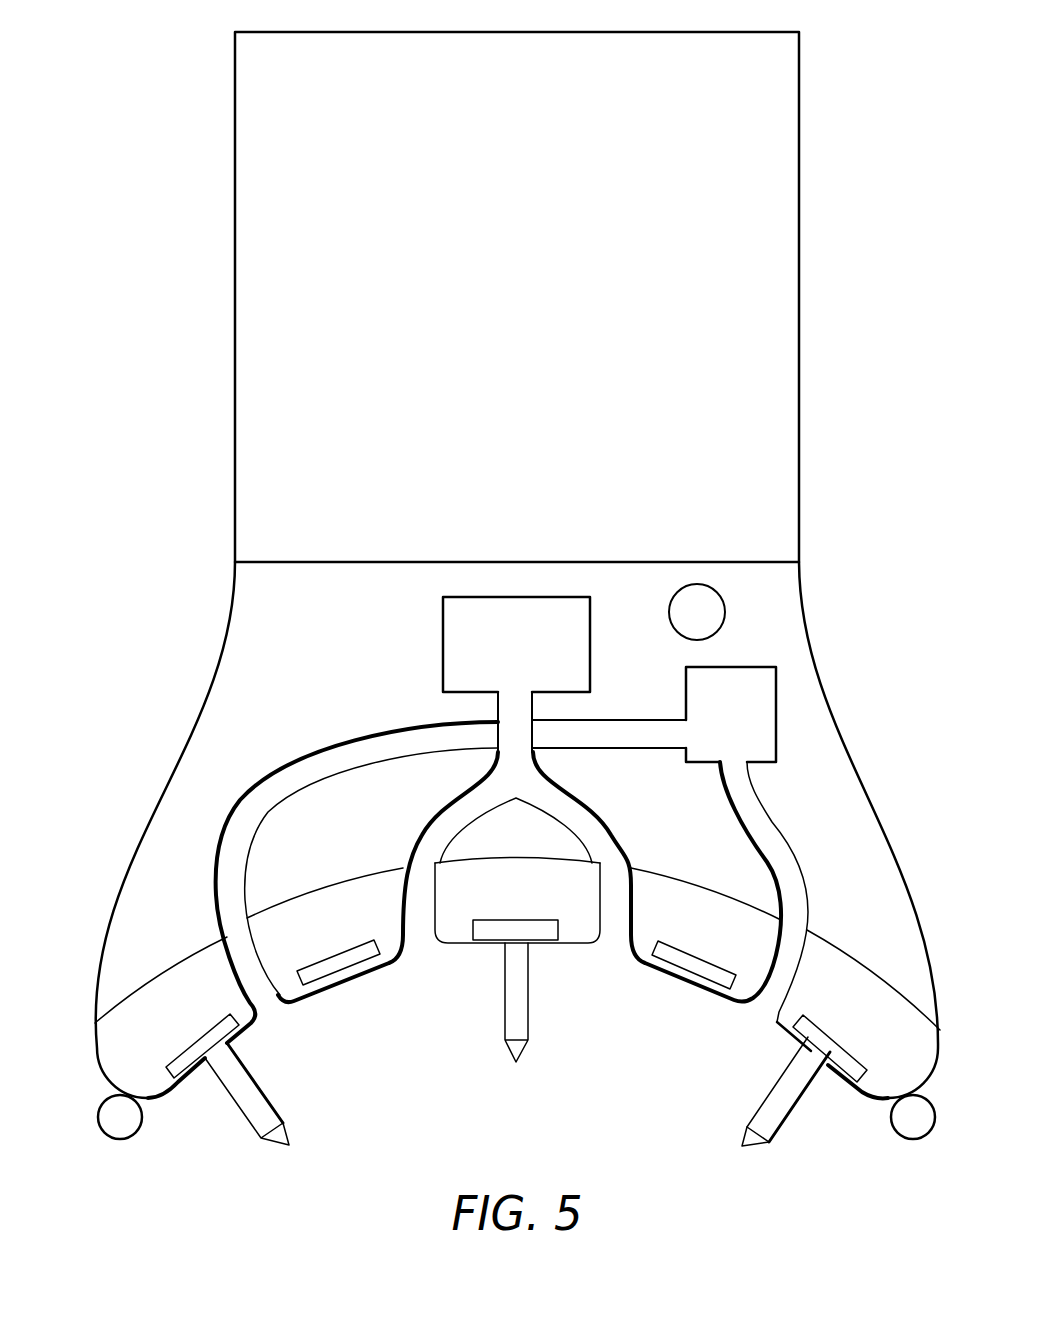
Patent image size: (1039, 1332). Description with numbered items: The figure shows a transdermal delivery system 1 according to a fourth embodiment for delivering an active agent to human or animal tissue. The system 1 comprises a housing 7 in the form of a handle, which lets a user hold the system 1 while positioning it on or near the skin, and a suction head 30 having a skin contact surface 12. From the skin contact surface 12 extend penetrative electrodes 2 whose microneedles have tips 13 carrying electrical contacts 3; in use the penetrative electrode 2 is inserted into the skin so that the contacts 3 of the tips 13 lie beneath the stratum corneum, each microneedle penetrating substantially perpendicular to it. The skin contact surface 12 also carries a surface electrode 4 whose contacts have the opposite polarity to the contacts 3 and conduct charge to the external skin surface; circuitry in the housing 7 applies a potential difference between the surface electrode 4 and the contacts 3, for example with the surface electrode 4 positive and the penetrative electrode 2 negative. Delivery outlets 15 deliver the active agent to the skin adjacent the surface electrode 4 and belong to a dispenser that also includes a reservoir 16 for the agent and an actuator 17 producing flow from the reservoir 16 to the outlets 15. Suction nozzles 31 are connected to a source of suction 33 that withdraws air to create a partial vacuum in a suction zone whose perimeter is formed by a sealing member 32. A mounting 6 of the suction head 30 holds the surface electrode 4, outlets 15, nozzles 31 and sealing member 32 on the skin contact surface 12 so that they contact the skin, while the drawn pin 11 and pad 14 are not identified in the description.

The transdermal delivery system 1 is at (864, 90).
The penetrative electrode 2 is at (243, 1136).
The electrical contacts 3 is at (752, 1152).
The surface electrode 4 is at (690, 1003).
The mounting 6 is at (891, 1061).
The housing 7 is at (507, 310).
The pin 11 is at (790, 1105).
The skin contact surface 12 is at (175, 1125).
The tips 13 is at (744, 1136).
The pad 14 is at (803, 1037).
The delivery outlets 15 is at (735, 1027).
The reservoir 16 is at (717, 726).
The actuator 17 is at (718, 667).
The suction head 30 is at (76, 562).
The suction nozzles 31 is at (608, 978).
The sealing member 32 is at (911, 1170).
The source of suction 33 is at (502, 657).